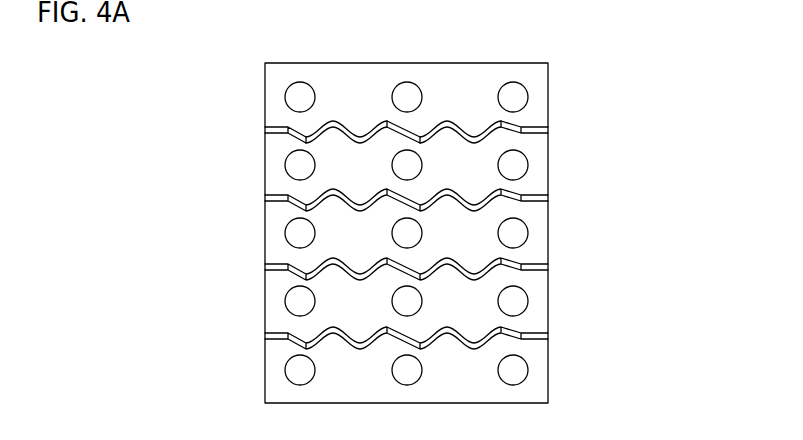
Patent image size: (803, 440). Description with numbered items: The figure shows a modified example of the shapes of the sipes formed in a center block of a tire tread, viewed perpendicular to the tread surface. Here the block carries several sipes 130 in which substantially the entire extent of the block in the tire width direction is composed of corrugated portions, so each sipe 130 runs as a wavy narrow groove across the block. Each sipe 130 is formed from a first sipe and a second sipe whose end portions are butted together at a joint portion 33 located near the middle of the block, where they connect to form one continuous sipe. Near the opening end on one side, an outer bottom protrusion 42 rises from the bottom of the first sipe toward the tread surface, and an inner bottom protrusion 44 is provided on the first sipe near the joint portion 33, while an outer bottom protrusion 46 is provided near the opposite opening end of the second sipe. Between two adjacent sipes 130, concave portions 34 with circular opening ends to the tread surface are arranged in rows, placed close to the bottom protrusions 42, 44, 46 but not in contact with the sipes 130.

The concave portion 34 is at (299, 93).
The outer bottom protrusion 42 is at (268, 126).
The inner bottom protrusion 44 is at (383, 110).
The joint portion 33 is at (403, 107).
The outer bottom protrusion 46 is at (542, 107).
The sipe 130 is at (442, 210).